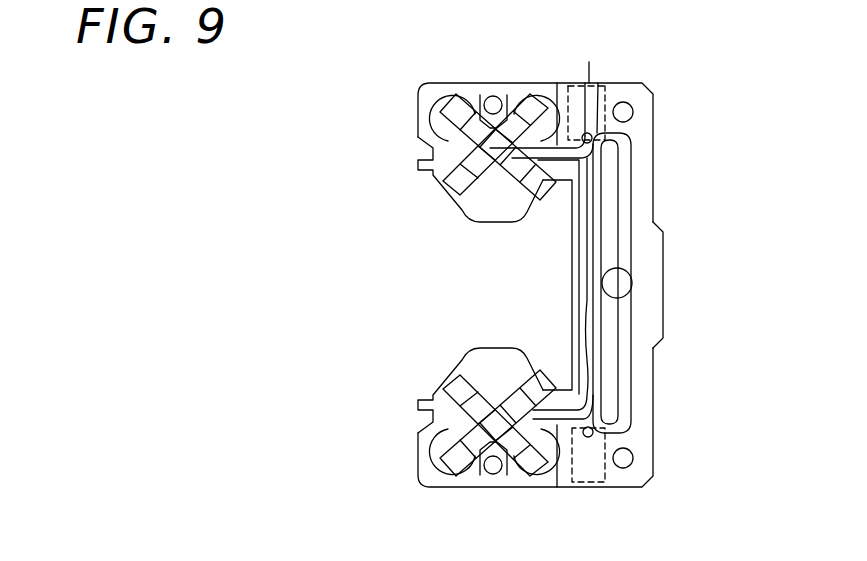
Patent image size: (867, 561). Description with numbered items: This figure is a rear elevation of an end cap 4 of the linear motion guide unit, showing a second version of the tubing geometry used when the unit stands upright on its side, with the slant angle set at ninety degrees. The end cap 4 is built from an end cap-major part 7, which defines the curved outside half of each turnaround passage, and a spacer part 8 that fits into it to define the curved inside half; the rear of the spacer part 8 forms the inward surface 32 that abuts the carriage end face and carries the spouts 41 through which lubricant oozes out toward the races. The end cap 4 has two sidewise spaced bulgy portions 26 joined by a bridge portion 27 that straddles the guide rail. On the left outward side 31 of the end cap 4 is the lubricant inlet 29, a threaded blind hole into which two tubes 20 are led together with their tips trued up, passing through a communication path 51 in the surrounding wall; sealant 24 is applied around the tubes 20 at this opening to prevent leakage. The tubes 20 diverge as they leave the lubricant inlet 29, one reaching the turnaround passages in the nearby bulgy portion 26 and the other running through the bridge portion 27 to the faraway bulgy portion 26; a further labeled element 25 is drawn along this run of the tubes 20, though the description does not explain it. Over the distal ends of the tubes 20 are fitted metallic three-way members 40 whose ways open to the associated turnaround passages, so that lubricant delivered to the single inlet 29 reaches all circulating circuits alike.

The end cap 4 is at (668, 100).
The end cap-major part 7 is at (515, 102).
The spacer part 8 is at (488, 130).
The tube 20 is at (553, 165).
The sealant 24 is at (591, 86).
The spring contact 25 is at (605, 264).
The bulgy portion 26 is at (432, 146).
The bridge portion 27 is at (640, 177).
The lubricant inlet 29 is at (598, 80).
The outward side 31 is at (561, 96).
The inward surface 32 is at (640, 335).
The three-way member 40 is at (498, 192).
The spout 41 is at (458, 200).
The communication path 51 is at (583, 84).